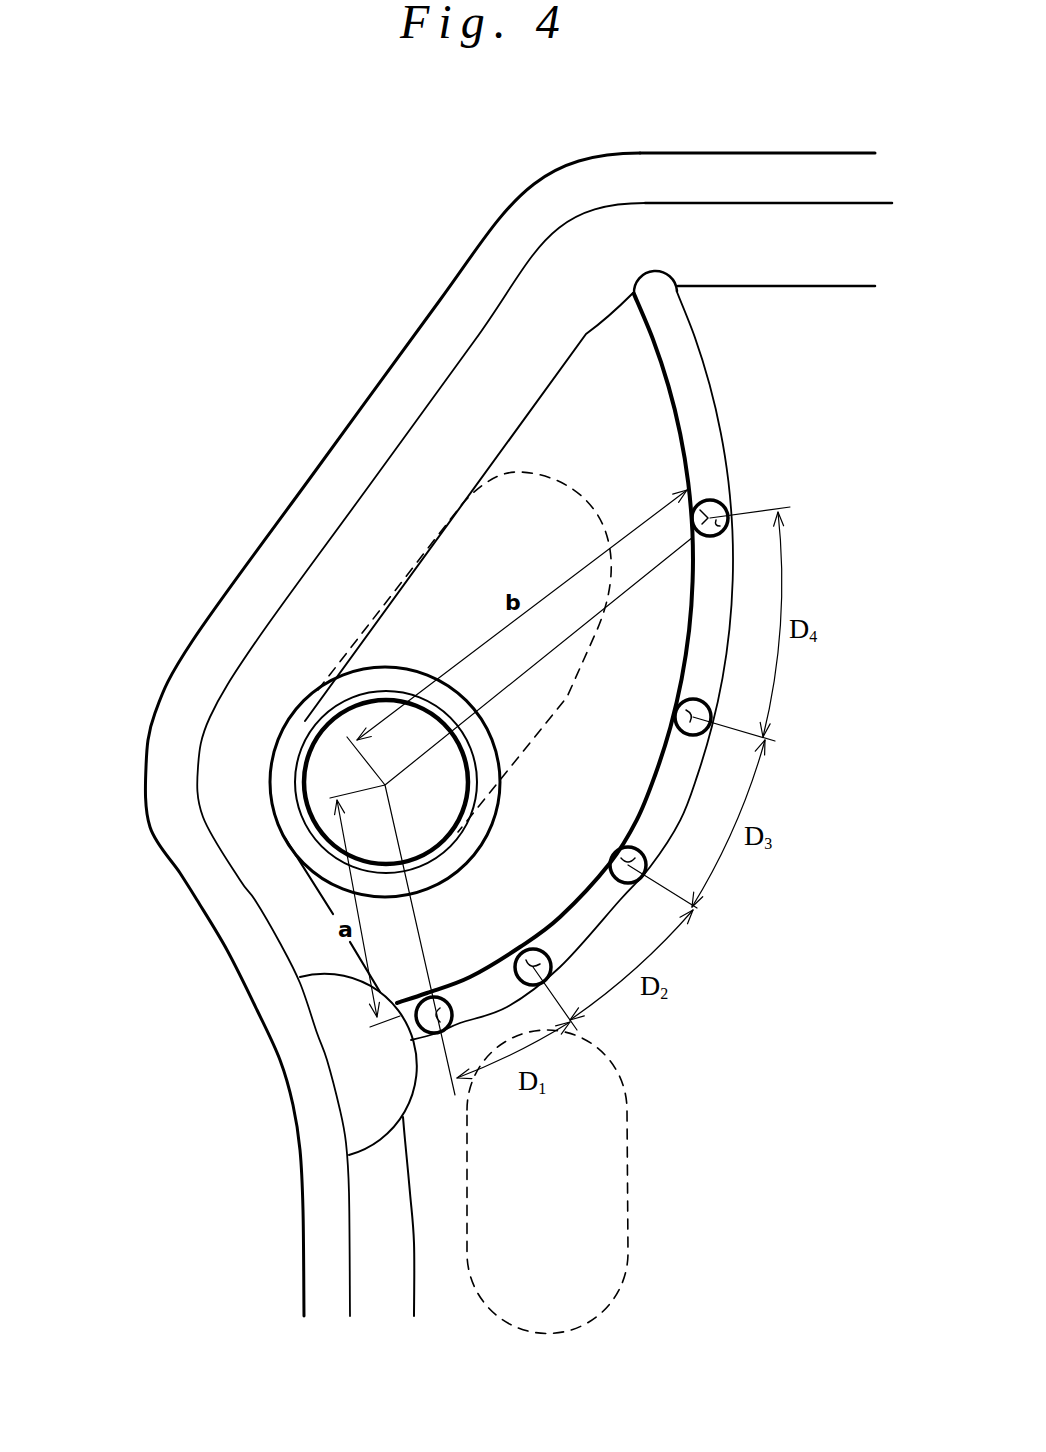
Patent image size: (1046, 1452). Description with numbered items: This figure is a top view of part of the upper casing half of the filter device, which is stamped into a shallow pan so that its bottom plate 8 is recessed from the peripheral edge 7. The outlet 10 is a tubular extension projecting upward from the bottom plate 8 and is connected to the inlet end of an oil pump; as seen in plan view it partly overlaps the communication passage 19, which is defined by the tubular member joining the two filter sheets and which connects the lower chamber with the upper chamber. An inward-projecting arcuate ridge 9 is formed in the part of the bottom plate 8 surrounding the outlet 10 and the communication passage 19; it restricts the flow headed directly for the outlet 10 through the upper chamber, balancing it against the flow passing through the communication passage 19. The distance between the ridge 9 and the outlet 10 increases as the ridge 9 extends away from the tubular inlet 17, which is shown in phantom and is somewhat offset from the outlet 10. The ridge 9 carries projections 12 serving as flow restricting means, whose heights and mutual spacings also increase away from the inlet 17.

The peripheral edge 7 is at (432, 352).
The bottom plate 8 is at (788, 340).
The arcuate ridge 9 is at (716, 396).
The outlet 10 is at (278, 742).
The projections 12 is at (703, 538).
The tubular inlet 17 is at (628, 1245).
The communication passage 19 is at (517, 472).